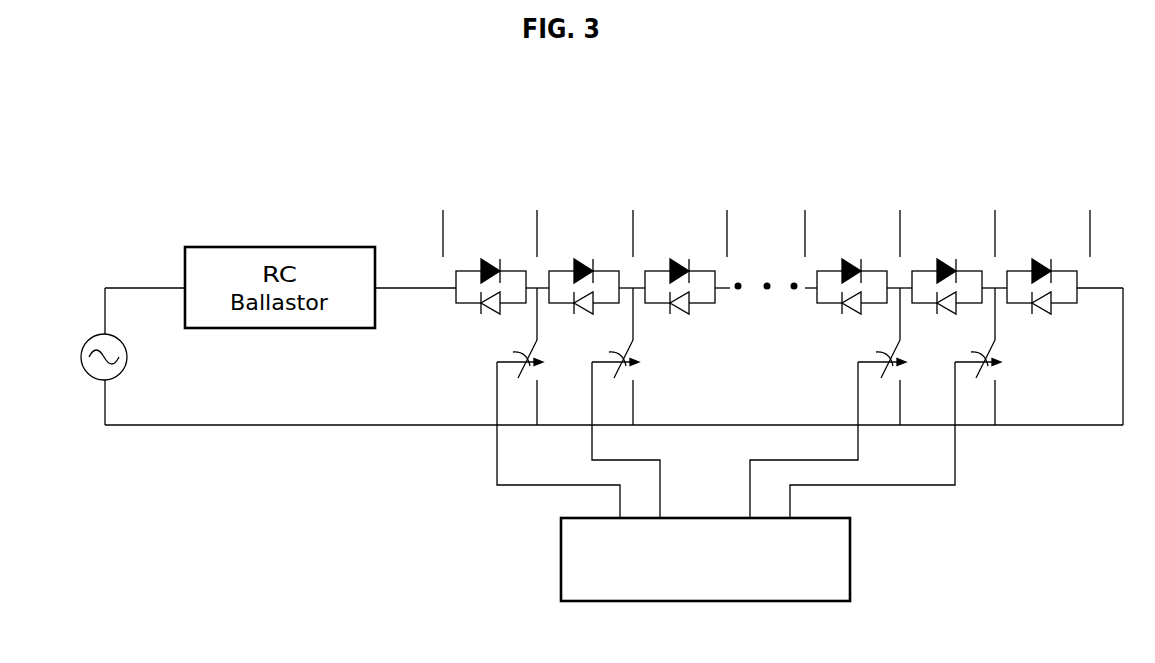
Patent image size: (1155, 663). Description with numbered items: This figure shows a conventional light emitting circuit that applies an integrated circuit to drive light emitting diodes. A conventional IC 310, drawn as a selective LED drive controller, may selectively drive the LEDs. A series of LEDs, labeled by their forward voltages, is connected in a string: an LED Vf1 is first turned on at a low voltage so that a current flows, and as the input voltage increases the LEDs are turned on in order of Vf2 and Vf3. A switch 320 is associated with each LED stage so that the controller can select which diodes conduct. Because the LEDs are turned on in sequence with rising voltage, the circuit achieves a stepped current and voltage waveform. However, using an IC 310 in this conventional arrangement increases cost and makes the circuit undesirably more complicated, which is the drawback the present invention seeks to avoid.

The integrated circuit 310 is at (850, 557).
The switch 320 is at (772, 388).
The LED Vf1 is at (491, 268).
The LED Vf2 is at (584, 268).
The LED Vf3 is at (680, 268).